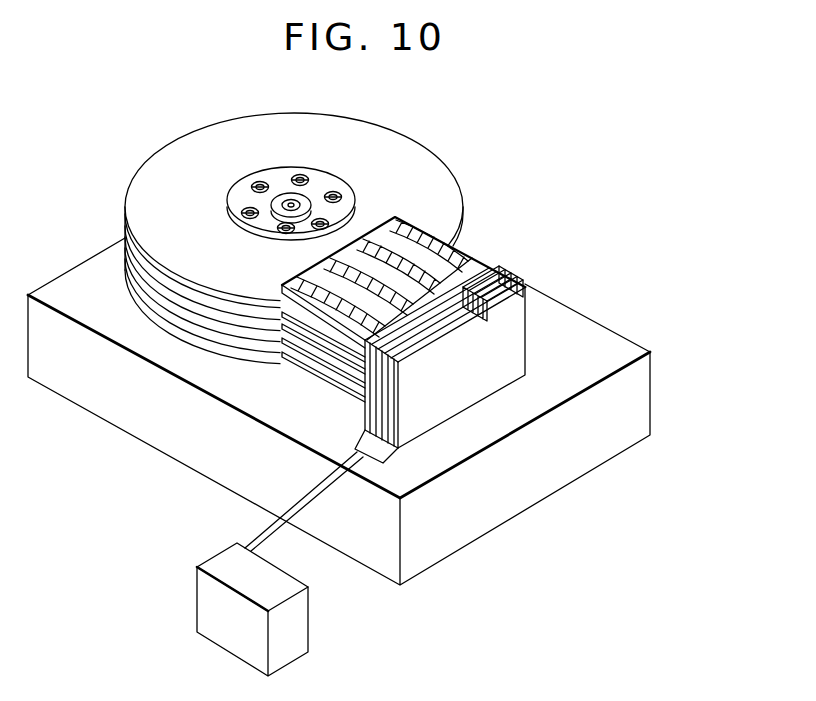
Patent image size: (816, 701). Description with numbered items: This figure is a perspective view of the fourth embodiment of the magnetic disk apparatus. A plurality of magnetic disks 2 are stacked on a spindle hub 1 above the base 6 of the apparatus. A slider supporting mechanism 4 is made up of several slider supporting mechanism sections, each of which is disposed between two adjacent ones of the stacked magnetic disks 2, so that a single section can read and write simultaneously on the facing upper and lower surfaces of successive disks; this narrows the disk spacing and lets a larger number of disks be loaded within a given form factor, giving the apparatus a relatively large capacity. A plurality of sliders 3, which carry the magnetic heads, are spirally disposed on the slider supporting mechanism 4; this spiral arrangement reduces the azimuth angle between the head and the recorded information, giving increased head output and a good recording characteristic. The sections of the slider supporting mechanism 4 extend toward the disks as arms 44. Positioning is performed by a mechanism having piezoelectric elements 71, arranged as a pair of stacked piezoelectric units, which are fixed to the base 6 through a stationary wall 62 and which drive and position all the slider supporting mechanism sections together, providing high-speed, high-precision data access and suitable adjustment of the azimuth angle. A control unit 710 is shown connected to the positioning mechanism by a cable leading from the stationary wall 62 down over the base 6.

The spindle hub 1 is at (290, 200).
The magnetic disk 2 is at (380, 148).
The slider 3 is at (470, 252).
The slider supporting mechanism 4 is at (480, 253).
The base 6 is at (592, 352).
The arms 44 is at (352, 322).
The stationary wall 62 is at (500, 330).
The piezoelectric element 71 is at (503, 273).
The controller 710 is at (223, 610).